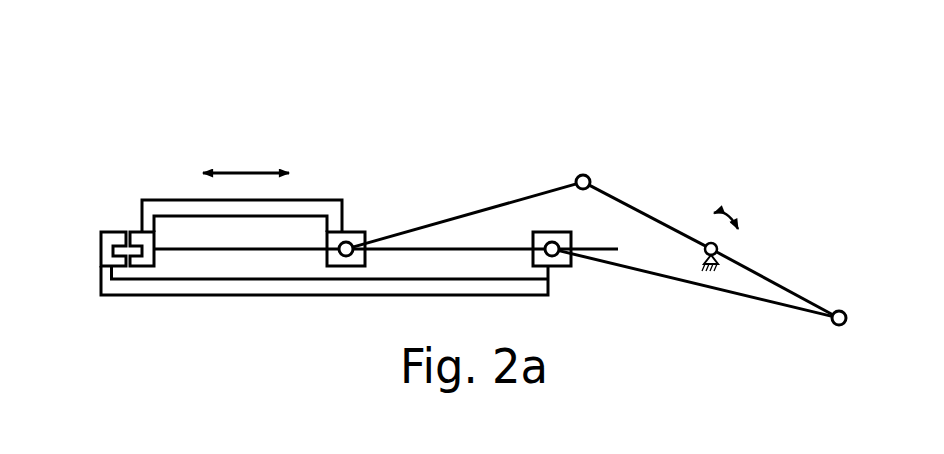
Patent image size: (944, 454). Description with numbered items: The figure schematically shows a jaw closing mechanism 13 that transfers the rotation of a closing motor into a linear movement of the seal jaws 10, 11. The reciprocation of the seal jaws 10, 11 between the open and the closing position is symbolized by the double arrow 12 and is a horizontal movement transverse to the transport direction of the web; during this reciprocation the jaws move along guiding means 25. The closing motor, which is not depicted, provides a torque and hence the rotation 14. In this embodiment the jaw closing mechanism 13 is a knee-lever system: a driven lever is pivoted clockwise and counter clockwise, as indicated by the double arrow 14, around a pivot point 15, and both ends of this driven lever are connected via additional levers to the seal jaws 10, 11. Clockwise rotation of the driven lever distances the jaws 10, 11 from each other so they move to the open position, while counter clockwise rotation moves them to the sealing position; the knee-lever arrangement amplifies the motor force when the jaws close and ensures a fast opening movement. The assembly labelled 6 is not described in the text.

The actuator unit 6 is at (169, 90).
The seal jaw 10 is at (108, 231).
The seal jaw 11 is at (140, 231).
The double arrow 12 is at (243, 171).
The jaw closing mechanism 13 is at (479, 118).
The rotation 14 is at (728, 212).
The pivot point 15 is at (711, 242).
The guiding means 25 is at (464, 246).